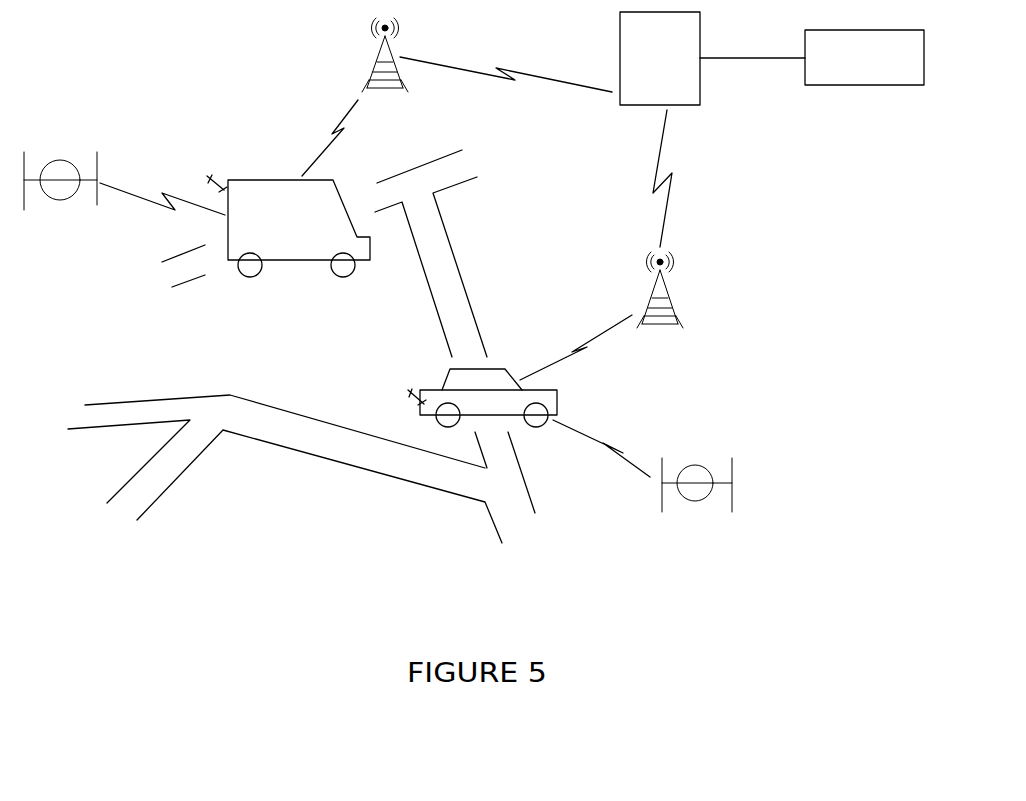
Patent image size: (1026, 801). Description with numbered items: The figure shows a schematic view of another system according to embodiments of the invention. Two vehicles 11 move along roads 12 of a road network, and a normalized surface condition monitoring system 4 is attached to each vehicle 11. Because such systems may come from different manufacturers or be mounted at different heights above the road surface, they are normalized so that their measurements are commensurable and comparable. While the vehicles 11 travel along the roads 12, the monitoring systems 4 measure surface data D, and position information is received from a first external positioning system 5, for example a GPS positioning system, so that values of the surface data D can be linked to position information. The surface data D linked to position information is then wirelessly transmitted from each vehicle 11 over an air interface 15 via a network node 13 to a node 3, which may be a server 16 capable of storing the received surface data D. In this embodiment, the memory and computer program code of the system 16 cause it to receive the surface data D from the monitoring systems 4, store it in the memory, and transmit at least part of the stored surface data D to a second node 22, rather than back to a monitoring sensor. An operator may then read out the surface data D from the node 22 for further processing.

The node 3 is at (669, 77).
The normalized surface condition monitoring system 4 is at (212, 180).
The first external positioning system 5 is at (58, 200).
The vehicle 11 is at (273, 180).
The road 12 is at (470, 300).
The network node 13 is at (373, 73).
The air interface 15 is at (130, 193).
The server 16 is at (617, 58).
The node 22 is at (864, 57).
The surface data D is at (477, 258).